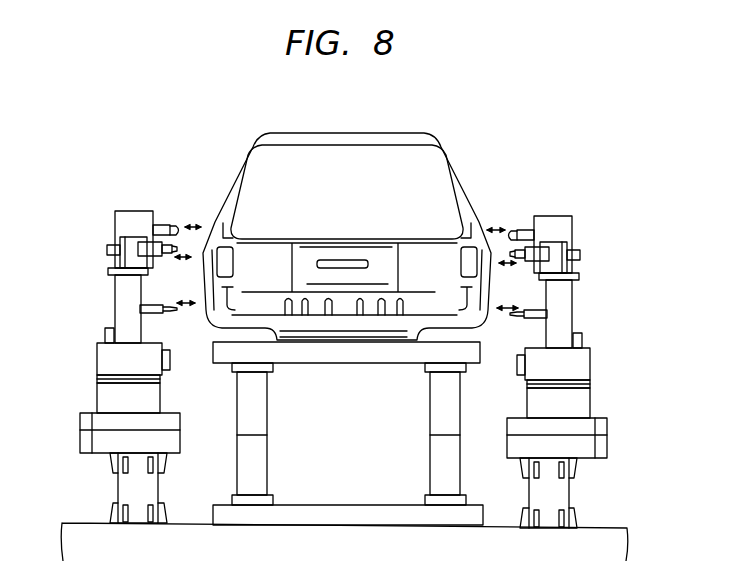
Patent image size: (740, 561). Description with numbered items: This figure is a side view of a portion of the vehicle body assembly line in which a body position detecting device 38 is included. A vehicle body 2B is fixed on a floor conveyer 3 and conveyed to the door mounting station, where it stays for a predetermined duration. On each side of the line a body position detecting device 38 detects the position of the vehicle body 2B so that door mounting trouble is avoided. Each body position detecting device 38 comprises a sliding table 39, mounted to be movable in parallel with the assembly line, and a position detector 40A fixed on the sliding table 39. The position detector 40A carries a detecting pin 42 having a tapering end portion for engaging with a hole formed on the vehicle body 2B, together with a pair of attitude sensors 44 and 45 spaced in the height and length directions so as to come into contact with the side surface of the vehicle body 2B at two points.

The vehicle body 2B is at (333, 130).
The floor conveyer 3 is at (331, 487).
The body position detecting device 38 is at (127, 200).
The detecting pin 42 is at (163, 225).
The attitude sensor 44 is at (153, 257).
The attitude sensor 45 is at (163, 318).
The position detector 40A is at (110, 285).
The sliding table 39 is at (88, 413).